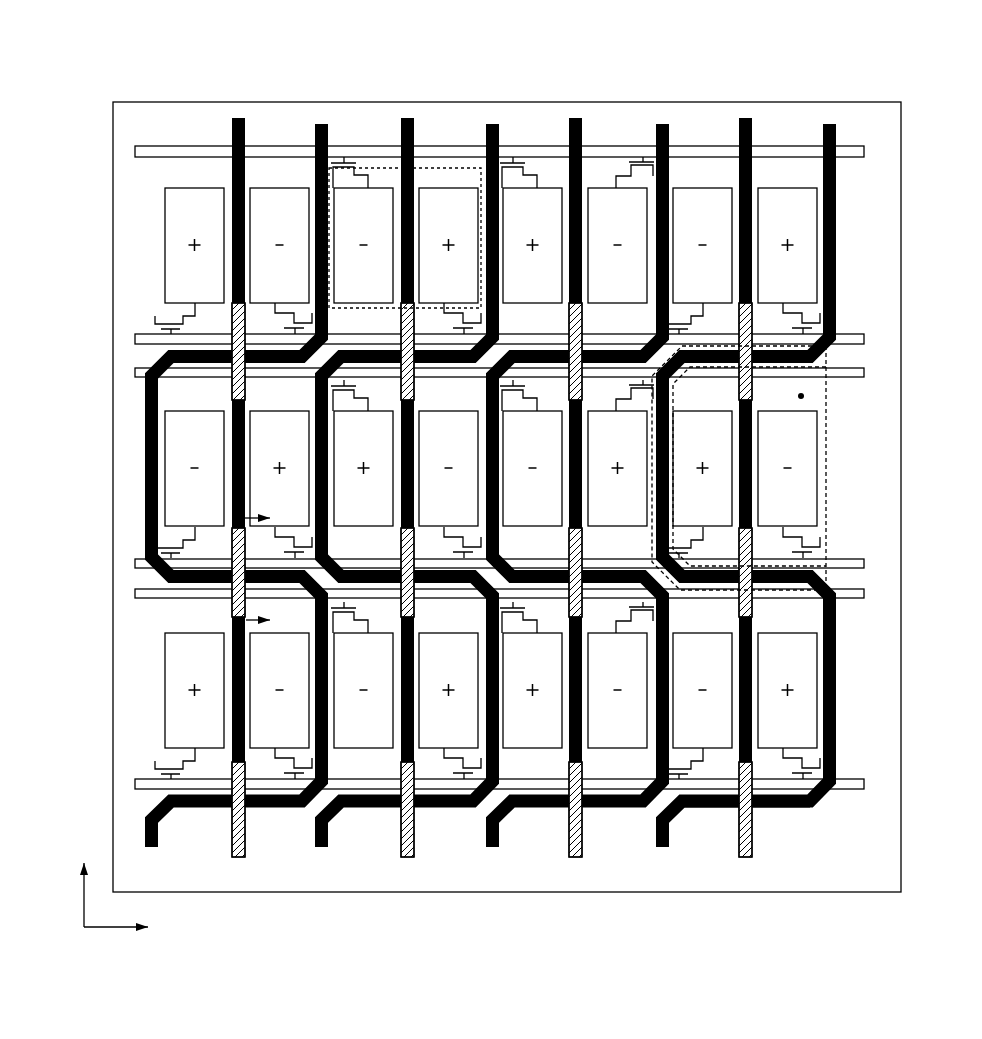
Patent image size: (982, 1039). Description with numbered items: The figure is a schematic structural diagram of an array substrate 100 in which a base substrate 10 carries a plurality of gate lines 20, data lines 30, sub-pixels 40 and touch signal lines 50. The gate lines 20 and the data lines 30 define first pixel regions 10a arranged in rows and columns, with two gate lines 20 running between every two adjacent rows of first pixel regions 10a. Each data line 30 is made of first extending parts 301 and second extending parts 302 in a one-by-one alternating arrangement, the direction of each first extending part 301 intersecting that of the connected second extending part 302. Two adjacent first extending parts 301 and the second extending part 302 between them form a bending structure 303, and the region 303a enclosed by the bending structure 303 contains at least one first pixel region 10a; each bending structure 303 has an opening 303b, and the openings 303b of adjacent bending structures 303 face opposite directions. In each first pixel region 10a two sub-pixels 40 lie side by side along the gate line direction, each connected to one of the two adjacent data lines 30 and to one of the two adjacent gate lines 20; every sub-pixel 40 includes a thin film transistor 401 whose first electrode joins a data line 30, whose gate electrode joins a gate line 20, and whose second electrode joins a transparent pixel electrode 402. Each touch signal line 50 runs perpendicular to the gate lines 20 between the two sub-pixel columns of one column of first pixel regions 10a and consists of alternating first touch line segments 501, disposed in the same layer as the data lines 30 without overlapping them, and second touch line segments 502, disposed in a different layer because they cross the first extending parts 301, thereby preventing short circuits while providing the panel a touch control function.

The array substrate 100 is at (72, 22).
The base substrate 10 is at (155, 118).
The first pixel region 10a is at (436, 168).
The gate line 20 is at (282, 152).
The data line 30 is at (326, 121).
The first extending part 301 is at (802, 808).
The second extending part 302 is at (835, 711).
The bending structure 303 is at (667, 382).
The region enclosed by the bending structure 303a is at (801, 396).
The opening 303b is at (827, 513).
The sub-pixel 40 is at (641, 162).
The thin film transistor 401 is at (603, 202).
The pixel electrode 402 is at (641, 167).
The touch signal line 50 is at (387, 487).
The first touch line segment 501 is at (231, 255).
The second touch line segment 502 is at (237, 321).